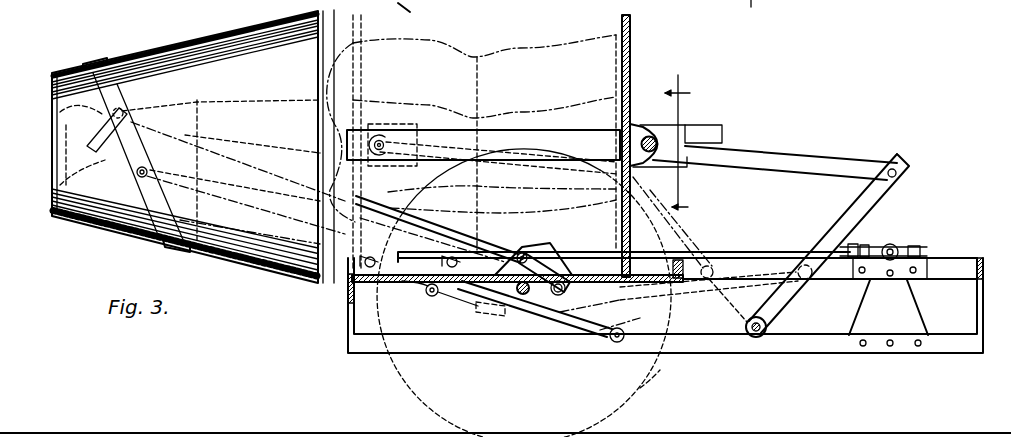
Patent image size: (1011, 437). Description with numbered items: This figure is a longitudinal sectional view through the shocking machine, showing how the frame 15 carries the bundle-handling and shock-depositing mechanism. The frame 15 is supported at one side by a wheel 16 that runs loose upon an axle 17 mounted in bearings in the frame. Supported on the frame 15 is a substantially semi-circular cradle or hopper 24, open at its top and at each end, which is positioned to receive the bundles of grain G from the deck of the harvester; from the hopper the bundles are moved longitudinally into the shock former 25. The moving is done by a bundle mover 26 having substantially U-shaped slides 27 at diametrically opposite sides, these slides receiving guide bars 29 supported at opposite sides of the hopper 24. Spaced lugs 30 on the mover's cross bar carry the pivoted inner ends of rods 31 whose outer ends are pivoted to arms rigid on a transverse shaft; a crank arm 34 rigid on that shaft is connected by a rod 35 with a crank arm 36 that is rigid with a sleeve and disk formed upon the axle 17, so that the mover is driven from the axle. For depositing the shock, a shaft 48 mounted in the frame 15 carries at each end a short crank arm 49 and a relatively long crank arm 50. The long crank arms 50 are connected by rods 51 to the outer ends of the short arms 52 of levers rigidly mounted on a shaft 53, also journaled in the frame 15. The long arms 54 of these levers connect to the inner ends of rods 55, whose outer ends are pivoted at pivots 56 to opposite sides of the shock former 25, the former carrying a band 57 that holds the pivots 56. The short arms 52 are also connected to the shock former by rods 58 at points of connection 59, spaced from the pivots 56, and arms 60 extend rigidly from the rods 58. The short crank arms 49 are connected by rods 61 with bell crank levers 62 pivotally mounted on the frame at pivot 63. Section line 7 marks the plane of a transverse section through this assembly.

The section line 7 is at (683, 140).
The frame 15 is at (690, 345).
The wheel 16 is at (640, 388).
The axle 17 is at (522, 293).
The cradle or hopper 24 is at (360, 285).
The shock former 25 is at (157, 50).
The bundle mover 26 is at (632, 35).
The U-shaped slides 27 is at (692, 122).
The guide bars 29 is at (722, 133).
The lugs 30 is at (655, 127).
The rods 31 is at (762, 155).
The crank arm 34 is at (797, 297).
The rod 35 is at (692, 297).
The crank arm 36 is at (558, 300).
The shaft 48 is at (895, 247).
The crank arms 49 is at (923, 249).
The crank arms 50 is at (877, 250).
The rods 51 is at (763, 251).
The short arms 52 is at (858, 208).
The shaft 53 is at (568, 283).
The long arms 54 is at (640, 322).
The rods 55 is at (308, 268).
The pivots 56 is at (137, 175).
The band 57 is at (97, 61).
The rods 58 is at (345, 163).
The points of connection 59 is at (221, 103).
The arms 60 is at (102, 128).
The rods 61 is at (490, 266).
The bell crank levers 62 is at (422, 292).
The pivot 63 is at (462, 305).
The bundles of grain G is at (487, 75).